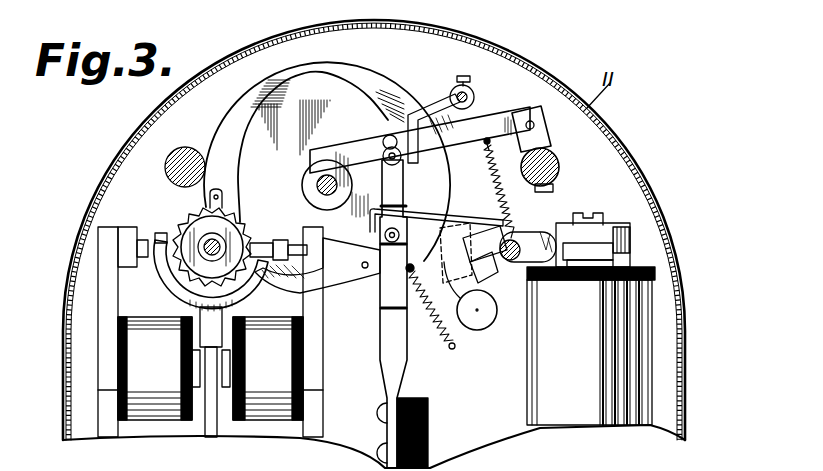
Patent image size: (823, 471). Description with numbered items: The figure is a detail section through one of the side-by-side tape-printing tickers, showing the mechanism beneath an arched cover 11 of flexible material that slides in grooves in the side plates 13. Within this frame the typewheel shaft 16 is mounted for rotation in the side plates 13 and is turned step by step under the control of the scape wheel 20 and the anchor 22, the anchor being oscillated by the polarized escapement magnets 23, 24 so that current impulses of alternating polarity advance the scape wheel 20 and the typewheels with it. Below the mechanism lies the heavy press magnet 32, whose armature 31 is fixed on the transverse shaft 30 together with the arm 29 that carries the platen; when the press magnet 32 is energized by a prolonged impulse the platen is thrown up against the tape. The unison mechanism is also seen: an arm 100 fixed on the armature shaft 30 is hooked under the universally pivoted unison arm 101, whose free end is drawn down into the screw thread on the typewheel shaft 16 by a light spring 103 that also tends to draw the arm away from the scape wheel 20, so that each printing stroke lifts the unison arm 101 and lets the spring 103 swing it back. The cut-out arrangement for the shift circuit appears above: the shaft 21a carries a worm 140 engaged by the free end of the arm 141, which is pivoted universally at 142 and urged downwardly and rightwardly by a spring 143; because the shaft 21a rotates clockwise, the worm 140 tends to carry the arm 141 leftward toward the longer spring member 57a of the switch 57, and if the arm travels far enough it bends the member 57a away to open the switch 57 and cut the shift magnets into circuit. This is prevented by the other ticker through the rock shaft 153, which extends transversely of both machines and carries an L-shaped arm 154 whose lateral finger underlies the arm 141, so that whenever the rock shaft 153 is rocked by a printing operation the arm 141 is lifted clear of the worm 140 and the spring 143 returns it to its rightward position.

The arched cover 11 is at (140, 143).
The side plate 13 is at (103, 192).
The typewheel shaft 16 is at (218, 243).
The scape wheel 20 is at (193, 215).
The shaft 21a is at (322, 197).
The anchor 22 is at (172, 285).
The polarized escapement magnet 23 is at (155, 368).
The polarized escapement magnet 24 is at (268, 368).
The arm 29 is at (458, 227).
The transverse shaft 30 is at (508, 273).
The armature 31 is at (630, 223).
The press magnet 32 is at (591, 346).
The switch 57 is at (380, 358).
The switch member 57a is at (390, 139).
The arm 100 is at (422, 213).
The unison arm 101 is at (352, 252).
The spring 103 is at (433, 340).
The worm 140 is at (317, 183).
The cut-out arm 141 is at (477, 132).
The universal pivot 142 is at (553, 139).
The spring 143 is at (503, 213).
The rock shaft 153 is at (470, 90).
The L-shaped arm 154 is at (432, 107).